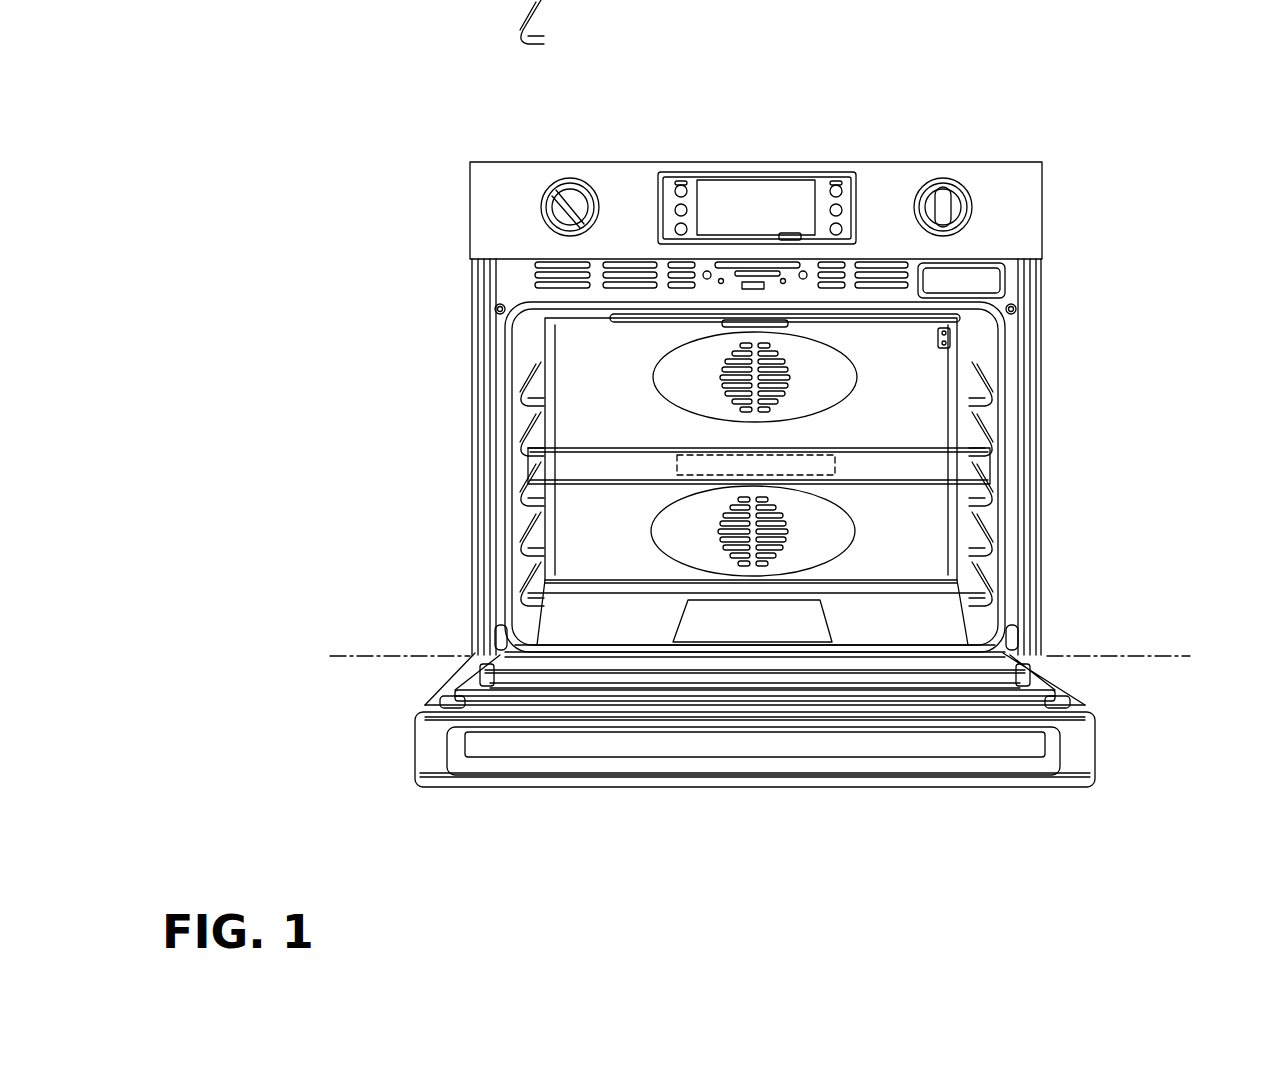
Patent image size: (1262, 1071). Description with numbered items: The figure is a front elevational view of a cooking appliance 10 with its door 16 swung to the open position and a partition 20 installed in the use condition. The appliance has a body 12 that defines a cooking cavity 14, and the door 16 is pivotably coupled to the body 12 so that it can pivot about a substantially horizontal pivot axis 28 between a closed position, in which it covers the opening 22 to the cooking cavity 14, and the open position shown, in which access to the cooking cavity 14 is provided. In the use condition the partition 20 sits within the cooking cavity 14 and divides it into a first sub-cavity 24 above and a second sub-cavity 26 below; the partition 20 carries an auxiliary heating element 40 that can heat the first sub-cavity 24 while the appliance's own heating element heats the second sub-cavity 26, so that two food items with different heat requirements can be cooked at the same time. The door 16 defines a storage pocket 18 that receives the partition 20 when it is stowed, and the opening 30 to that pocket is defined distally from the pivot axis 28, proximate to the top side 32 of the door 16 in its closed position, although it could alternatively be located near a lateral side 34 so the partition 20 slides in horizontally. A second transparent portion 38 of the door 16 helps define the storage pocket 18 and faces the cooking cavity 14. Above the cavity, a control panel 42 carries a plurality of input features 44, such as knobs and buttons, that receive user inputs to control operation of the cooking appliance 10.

The cooking appliance 10 is at (1124, 117).
The body 12 is at (1042, 330).
The cooking cavity 14 is at (987, 580).
The door 16 is at (1098, 718).
The storage pocket 18 is at (1033, 697).
The partition 20 is at (905, 487).
The opening 22 is at (538, 382).
The first sub-cavity 24 is at (553, 342).
The second sub-cavity 26 is at (540, 610).
The pivot axis 28 is at (345, 657).
The opening 30 is at (540, 700).
The top side 32 is at (1030, 720).
The lateral side 34 is at (445, 695).
The second transparent portion 38 is at (785, 660).
The auxiliary heating element 40 is at (843, 447).
The control panel 42 is at (893, 188).
The input features 44 is at (580, 200).